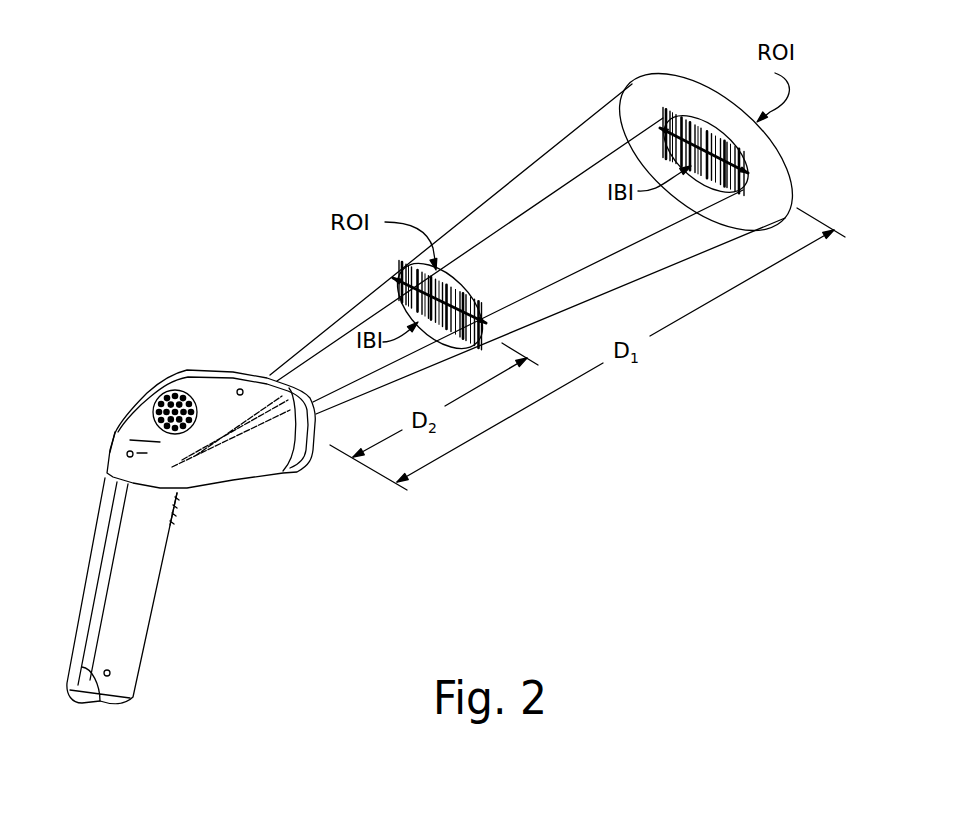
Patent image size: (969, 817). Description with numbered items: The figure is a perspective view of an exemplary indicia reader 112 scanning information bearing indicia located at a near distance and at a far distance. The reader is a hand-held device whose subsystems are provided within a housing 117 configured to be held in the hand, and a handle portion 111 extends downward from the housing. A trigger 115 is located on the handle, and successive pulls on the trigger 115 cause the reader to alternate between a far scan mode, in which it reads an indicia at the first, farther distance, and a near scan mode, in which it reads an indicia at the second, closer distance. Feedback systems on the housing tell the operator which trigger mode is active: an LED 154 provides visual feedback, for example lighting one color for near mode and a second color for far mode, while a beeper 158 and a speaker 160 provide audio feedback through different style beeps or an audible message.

The indicia reader 112 is at (237, 458).
The speaker 160 is at (173, 390).
The LED 154 is at (240, 389).
The housing 117 is at (113, 437).
The beeper 158 is at (127, 454).
The handle portion 111 is at (117, 665).
The trigger 115 is at (178, 512).